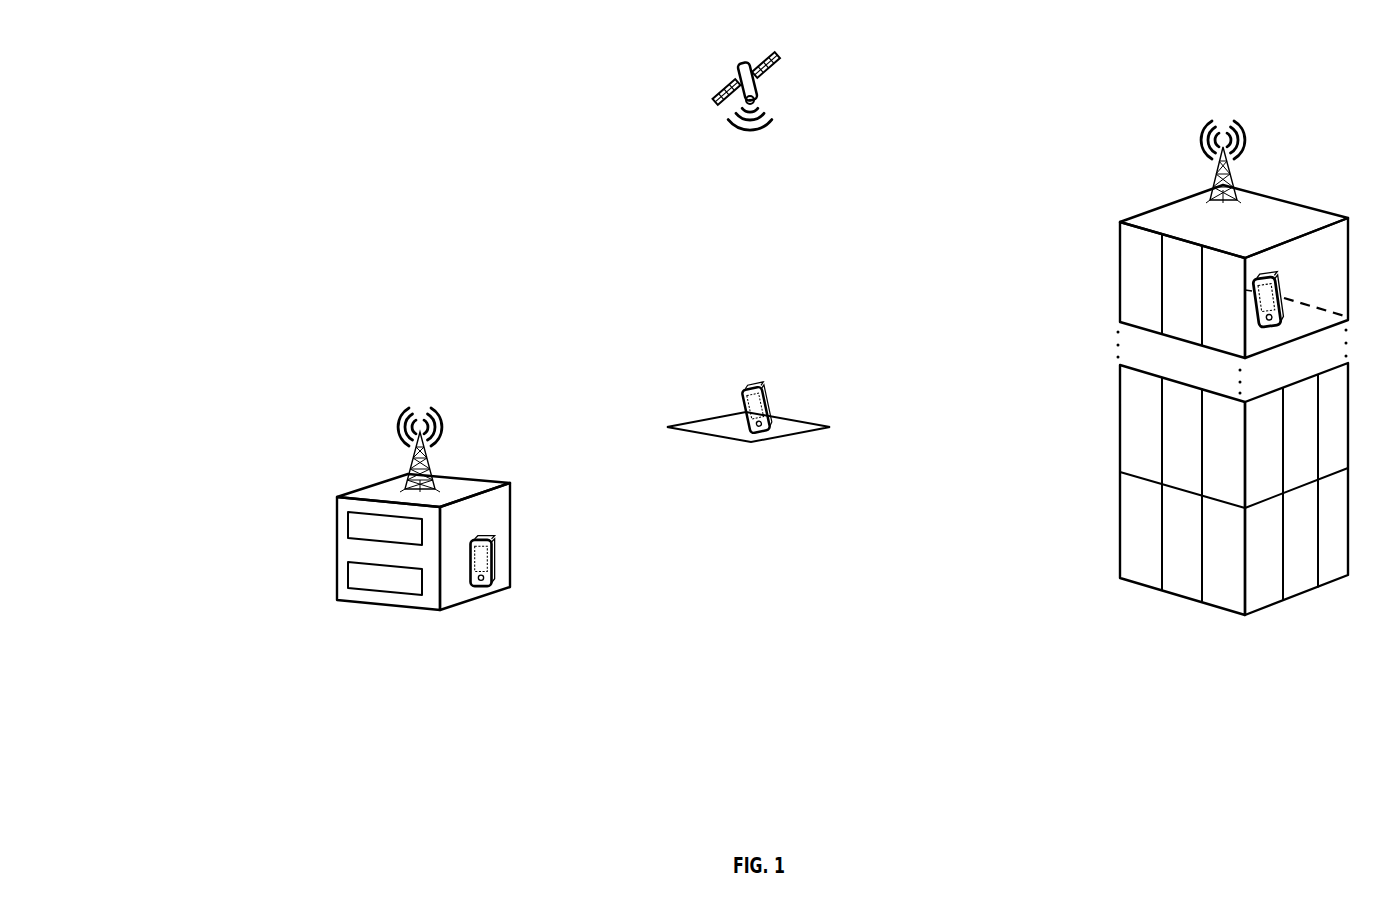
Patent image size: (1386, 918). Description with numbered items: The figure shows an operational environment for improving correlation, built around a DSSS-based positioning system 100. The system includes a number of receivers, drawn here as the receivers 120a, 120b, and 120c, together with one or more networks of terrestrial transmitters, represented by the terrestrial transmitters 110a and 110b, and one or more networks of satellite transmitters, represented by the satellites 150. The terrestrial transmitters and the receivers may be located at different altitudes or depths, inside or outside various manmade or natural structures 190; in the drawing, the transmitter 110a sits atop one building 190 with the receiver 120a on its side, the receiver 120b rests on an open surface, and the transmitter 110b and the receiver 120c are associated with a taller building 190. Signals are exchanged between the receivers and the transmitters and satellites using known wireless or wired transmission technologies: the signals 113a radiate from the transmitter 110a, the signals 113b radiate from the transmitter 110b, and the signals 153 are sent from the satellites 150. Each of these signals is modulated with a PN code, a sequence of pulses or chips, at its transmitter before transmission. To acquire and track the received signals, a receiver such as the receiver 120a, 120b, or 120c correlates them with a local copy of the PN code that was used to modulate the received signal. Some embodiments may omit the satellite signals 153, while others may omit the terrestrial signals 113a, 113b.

The DSSS-based positioning system 100 is at (106, 72).
The satellite transmitters 150 is at (737, 66).
The signals 153 is at (772, 118).
The structures 190 is at (440, 612).
The signals 113a is at (393, 417).
The terrestrial transmitter 110a is at (407, 470).
The receiver 120a is at (498, 592).
The receiver 120b is at (770, 399).
The signals 113b is at (1252, 129).
The terrestrial transmitter 110b is at (1213, 181).
The receiver 120c is at (1281, 282).